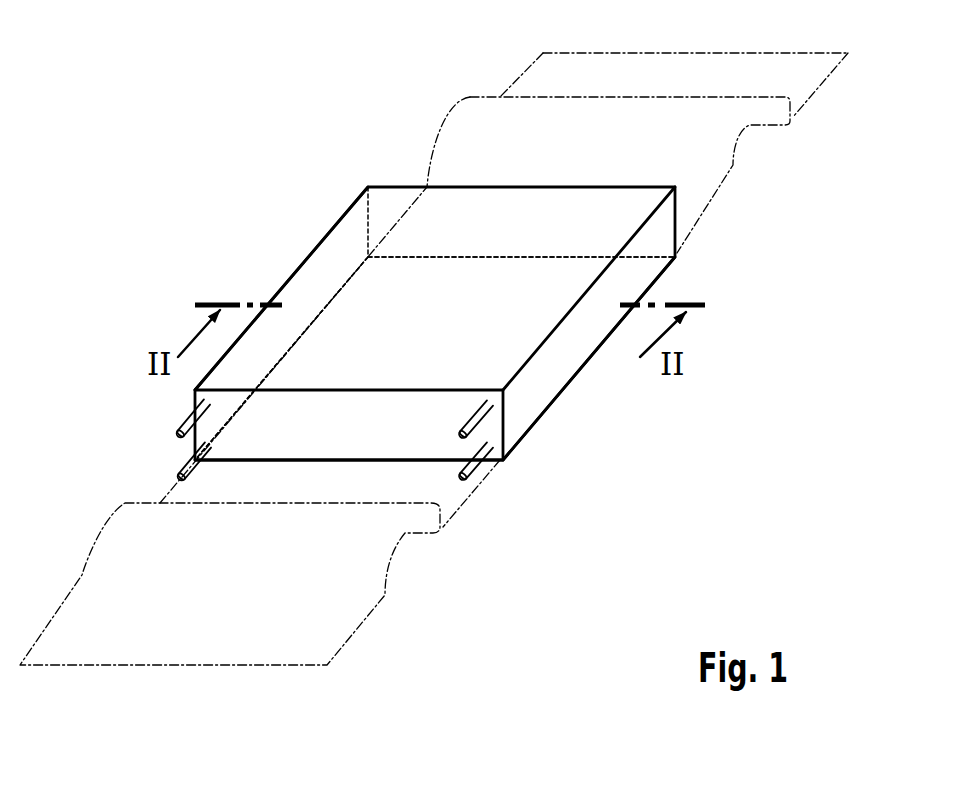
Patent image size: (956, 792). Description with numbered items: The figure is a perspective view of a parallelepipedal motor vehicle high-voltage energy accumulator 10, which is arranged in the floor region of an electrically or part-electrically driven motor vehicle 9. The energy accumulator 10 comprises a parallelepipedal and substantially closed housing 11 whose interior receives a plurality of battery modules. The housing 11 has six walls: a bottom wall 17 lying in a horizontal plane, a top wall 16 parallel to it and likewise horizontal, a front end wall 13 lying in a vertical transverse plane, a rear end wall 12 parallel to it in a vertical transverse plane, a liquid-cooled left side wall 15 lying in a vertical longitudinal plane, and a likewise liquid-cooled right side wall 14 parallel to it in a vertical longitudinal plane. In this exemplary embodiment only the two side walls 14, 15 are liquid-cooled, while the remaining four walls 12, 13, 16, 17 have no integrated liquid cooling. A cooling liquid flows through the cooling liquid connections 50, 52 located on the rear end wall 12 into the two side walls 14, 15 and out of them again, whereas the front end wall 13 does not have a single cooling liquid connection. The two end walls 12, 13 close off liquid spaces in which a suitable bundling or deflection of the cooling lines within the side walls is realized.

The motor vehicle 9 is at (180, 666).
The motor vehicle high-voltage energy accumulator 10 is at (391, 334).
The housing 11 is at (415, 175).
The rear end wall 12 is at (385, 435).
The front end wall 13 is at (403, 242).
The right side wall 14 is at (540, 385).
The left side wall 15 is at (308, 295).
The top wall 16 is at (377, 307).
The bottom wall 17 is at (504, 350).
The cooling liquid connection 50 is at (187, 462).
The cooling liquid connection 52 is at (187, 418).